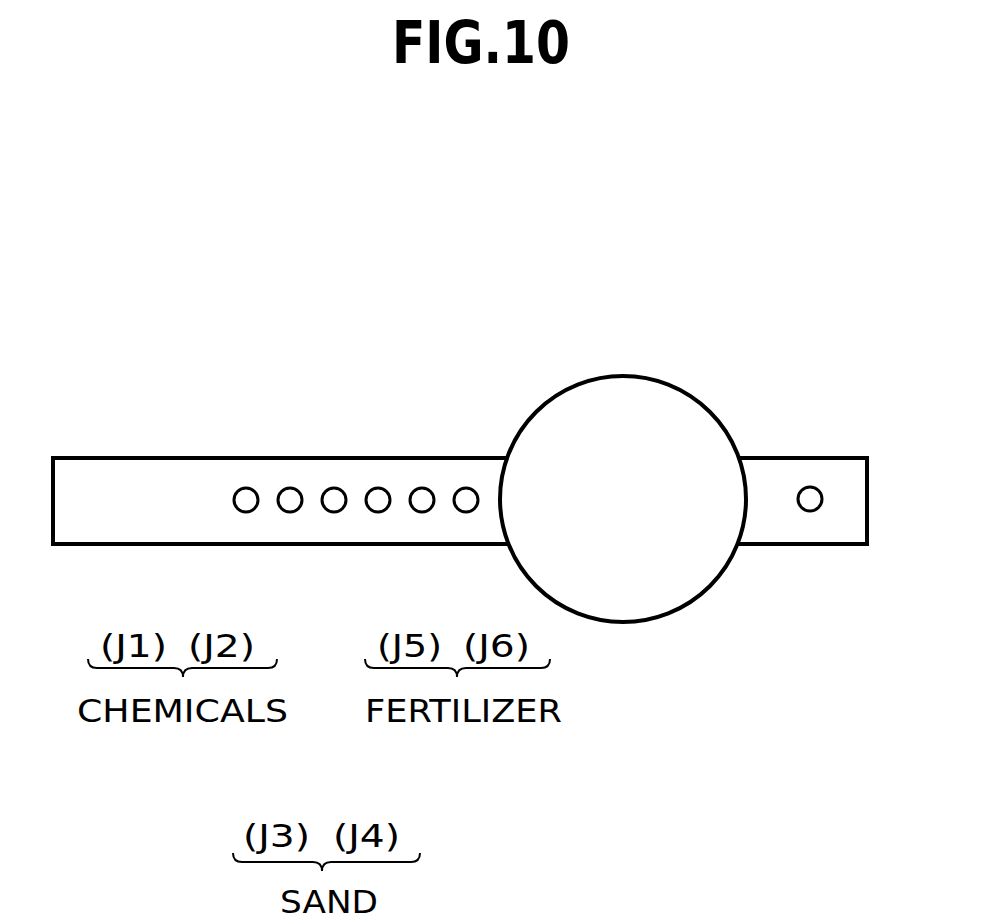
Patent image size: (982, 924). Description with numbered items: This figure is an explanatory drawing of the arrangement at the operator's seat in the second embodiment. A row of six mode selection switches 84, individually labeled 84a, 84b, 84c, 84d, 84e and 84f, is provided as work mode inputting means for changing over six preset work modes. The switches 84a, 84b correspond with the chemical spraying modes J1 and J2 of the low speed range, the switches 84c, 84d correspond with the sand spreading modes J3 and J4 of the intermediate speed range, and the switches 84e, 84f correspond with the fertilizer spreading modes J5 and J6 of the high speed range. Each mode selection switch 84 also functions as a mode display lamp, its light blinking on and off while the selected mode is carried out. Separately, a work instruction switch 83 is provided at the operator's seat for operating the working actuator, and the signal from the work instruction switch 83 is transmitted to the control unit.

The mode selection switch 84 is at (485, 449).
The mode selection switch 84a is at (246, 506).
The mode selection switch 84b is at (290, 506).
The mode selection switch 84c is at (334, 506).
The mode selection switch 84d is at (378, 506).
The mode selection switch 84e is at (422, 506).
The mode selection switch 84f is at (466, 506).
The work instruction switch 83 is at (810, 505).